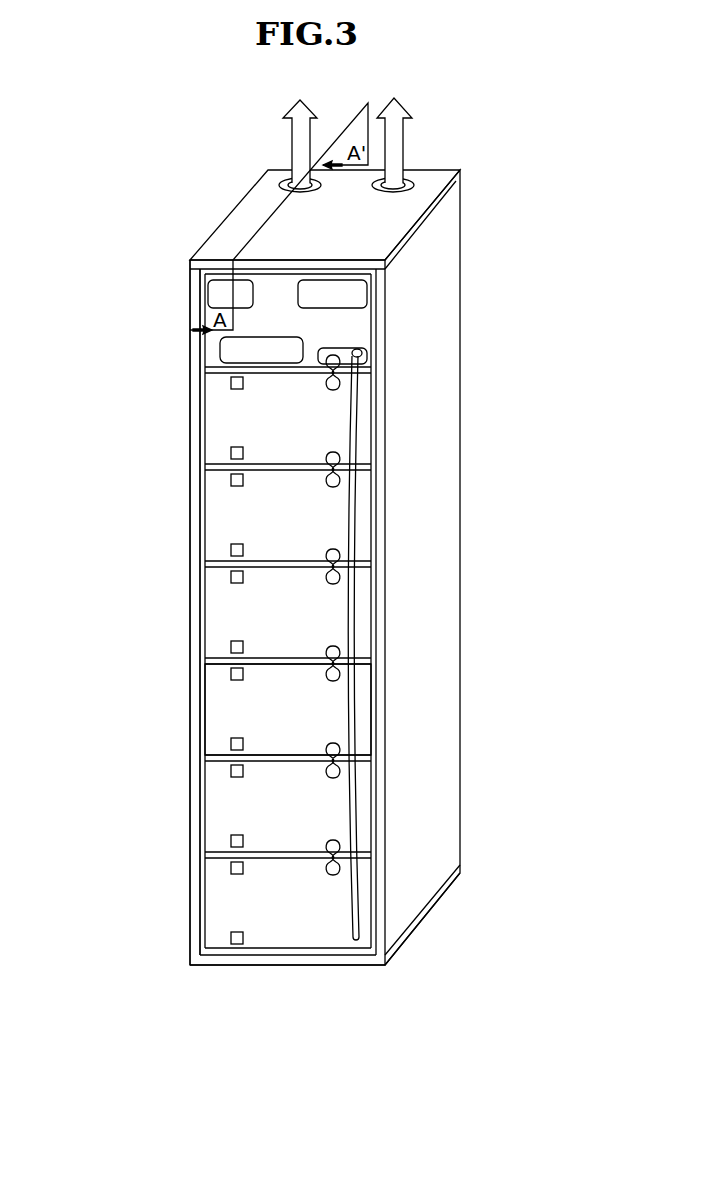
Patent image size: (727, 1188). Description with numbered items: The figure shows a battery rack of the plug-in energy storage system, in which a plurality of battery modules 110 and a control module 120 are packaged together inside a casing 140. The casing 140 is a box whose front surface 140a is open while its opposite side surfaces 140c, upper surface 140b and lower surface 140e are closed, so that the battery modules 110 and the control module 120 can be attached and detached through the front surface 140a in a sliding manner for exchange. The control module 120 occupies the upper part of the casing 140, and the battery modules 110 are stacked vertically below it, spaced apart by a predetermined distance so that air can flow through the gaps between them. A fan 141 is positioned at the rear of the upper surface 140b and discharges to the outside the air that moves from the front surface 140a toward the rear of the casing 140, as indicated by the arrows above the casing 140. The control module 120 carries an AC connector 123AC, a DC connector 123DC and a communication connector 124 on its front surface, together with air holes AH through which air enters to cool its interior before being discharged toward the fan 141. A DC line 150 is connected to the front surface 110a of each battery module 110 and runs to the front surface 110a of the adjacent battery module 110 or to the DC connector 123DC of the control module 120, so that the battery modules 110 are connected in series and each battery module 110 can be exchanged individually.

The battery module 110 is at (222, 421).
The front surface of battery module 110a is at (332, 713).
The control module 120 is at (213, 340).
The AC connector 123AC is at (345, 293).
The DC connector 123DC is at (350, 348).
The communication connector 124 is at (222, 295).
The air hole AH is at (240, 350).
The casing 140 is at (470, 320).
The front surface of casing 140a is at (193, 570).
The upper surface of casing 140b is at (250, 227).
The side surface of casing 140c is at (427, 463).
The lower surface of casing 140e is at (333, 965).
The fan 141 is at (288, 196).
The DC line 150 is at (338, 381).